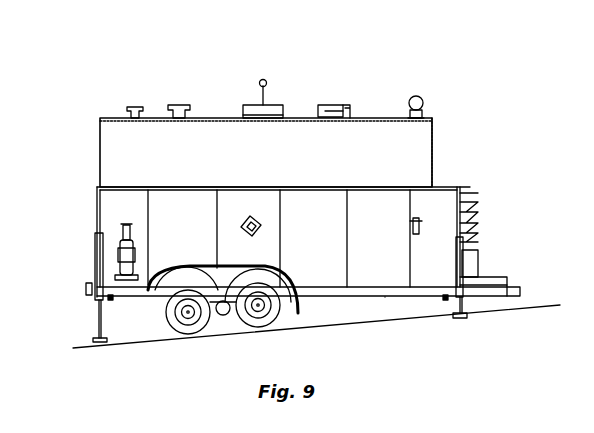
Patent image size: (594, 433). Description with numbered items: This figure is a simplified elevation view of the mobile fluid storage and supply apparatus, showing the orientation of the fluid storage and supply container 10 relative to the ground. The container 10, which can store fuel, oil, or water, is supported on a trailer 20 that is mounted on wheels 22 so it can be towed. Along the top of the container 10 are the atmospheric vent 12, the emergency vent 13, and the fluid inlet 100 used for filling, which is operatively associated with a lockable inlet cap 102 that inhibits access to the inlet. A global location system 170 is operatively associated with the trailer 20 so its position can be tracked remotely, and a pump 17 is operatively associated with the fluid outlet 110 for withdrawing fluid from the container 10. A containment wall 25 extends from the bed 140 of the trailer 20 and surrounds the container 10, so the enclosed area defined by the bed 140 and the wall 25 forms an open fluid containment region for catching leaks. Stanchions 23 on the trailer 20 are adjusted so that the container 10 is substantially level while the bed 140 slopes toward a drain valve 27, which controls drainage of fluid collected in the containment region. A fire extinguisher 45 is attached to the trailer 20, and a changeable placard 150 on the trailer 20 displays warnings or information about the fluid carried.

The fluid storage and supply container 10 is at (305, 172).
The atmospheric vent 12 is at (127, 110).
The emergency vent 13 is at (170, 108).
The global location system 170 is at (252, 108).
The fluid inlet 100 is at (320, 115).
The lockable inlet cap 102 is at (324, 107).
The pump 17 is at (409, 103).
The fluid outlet 110 is at (425, 113).
The containment wall 25 is at (447, 187).
The trailer 20 is at (470, 187).
The changeable placard 150 is at (259, 229).
The fire extinguisher 45 is at (120, 232).
The stanchion 23 is at (100, 268).
The drain valve 27 is at (100, 342).
The wheels 22 is at (232, 333).
The bed 140 is at (385, 297).